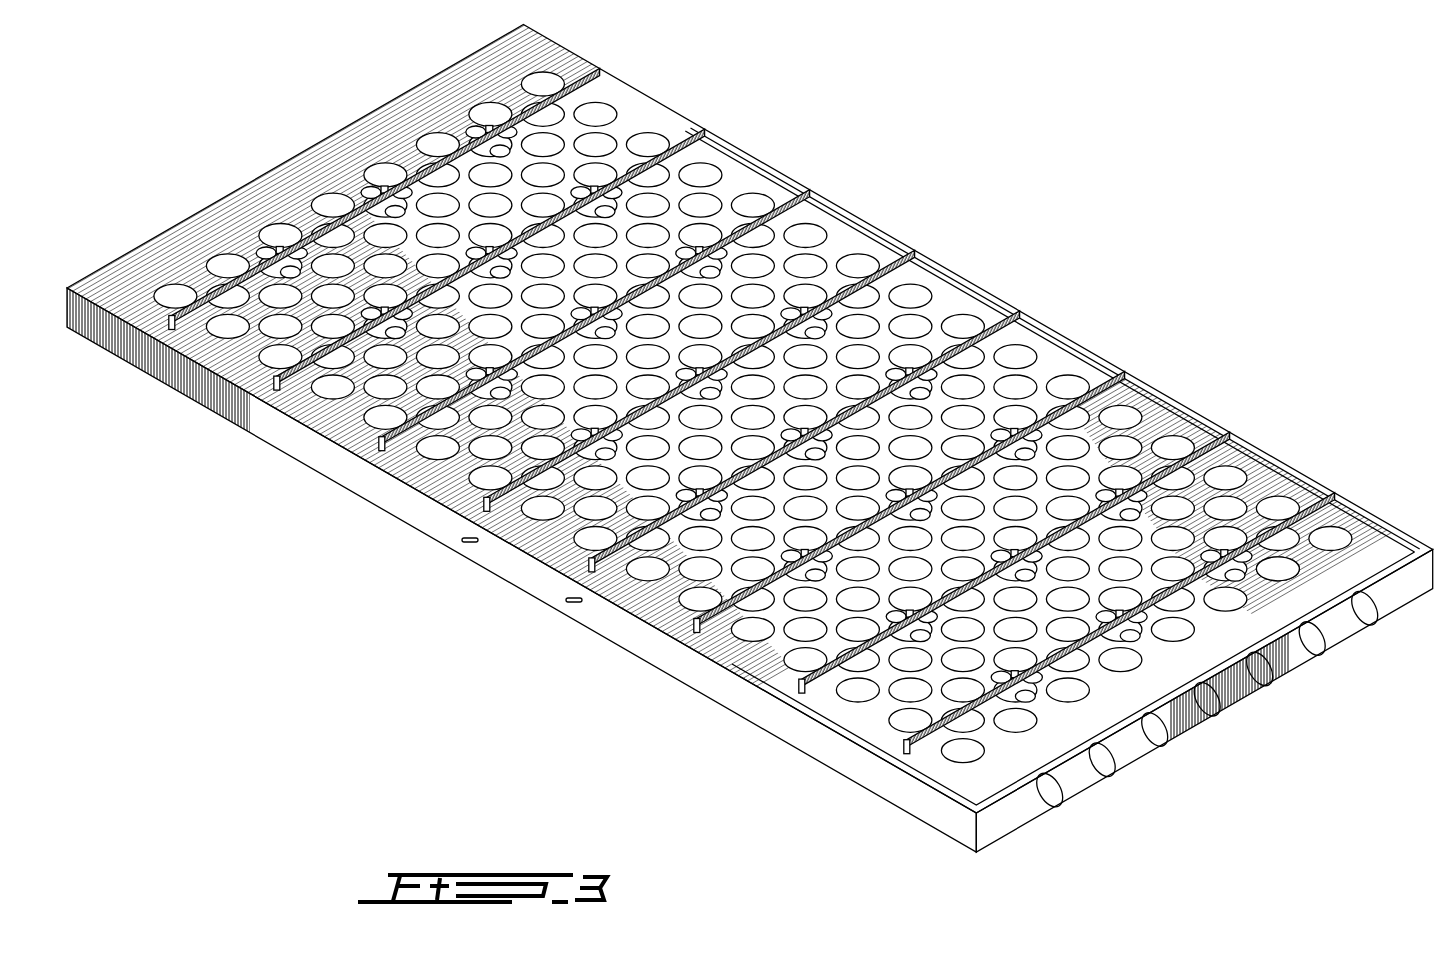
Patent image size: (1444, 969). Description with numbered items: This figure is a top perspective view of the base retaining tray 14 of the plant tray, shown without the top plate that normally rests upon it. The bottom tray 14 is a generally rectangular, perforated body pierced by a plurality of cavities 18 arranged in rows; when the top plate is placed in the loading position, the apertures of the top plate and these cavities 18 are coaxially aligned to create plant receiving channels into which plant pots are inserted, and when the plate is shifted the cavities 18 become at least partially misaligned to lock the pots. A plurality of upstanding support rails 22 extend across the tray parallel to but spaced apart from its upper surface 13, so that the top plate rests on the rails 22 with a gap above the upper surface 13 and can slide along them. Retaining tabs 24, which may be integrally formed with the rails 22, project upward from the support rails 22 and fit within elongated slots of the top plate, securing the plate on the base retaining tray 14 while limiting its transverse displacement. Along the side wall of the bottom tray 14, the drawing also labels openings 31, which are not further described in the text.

The base retaining tray 14 is at (946, 240).
The support rails 22 is at (1100, 382).
The retaining tabs 24 is at (1072, 509).
The cavities 18 is at (1268, 550).
The upper surface 13 is at (1374, 548).
The side opening 31 is at (1363, 605).